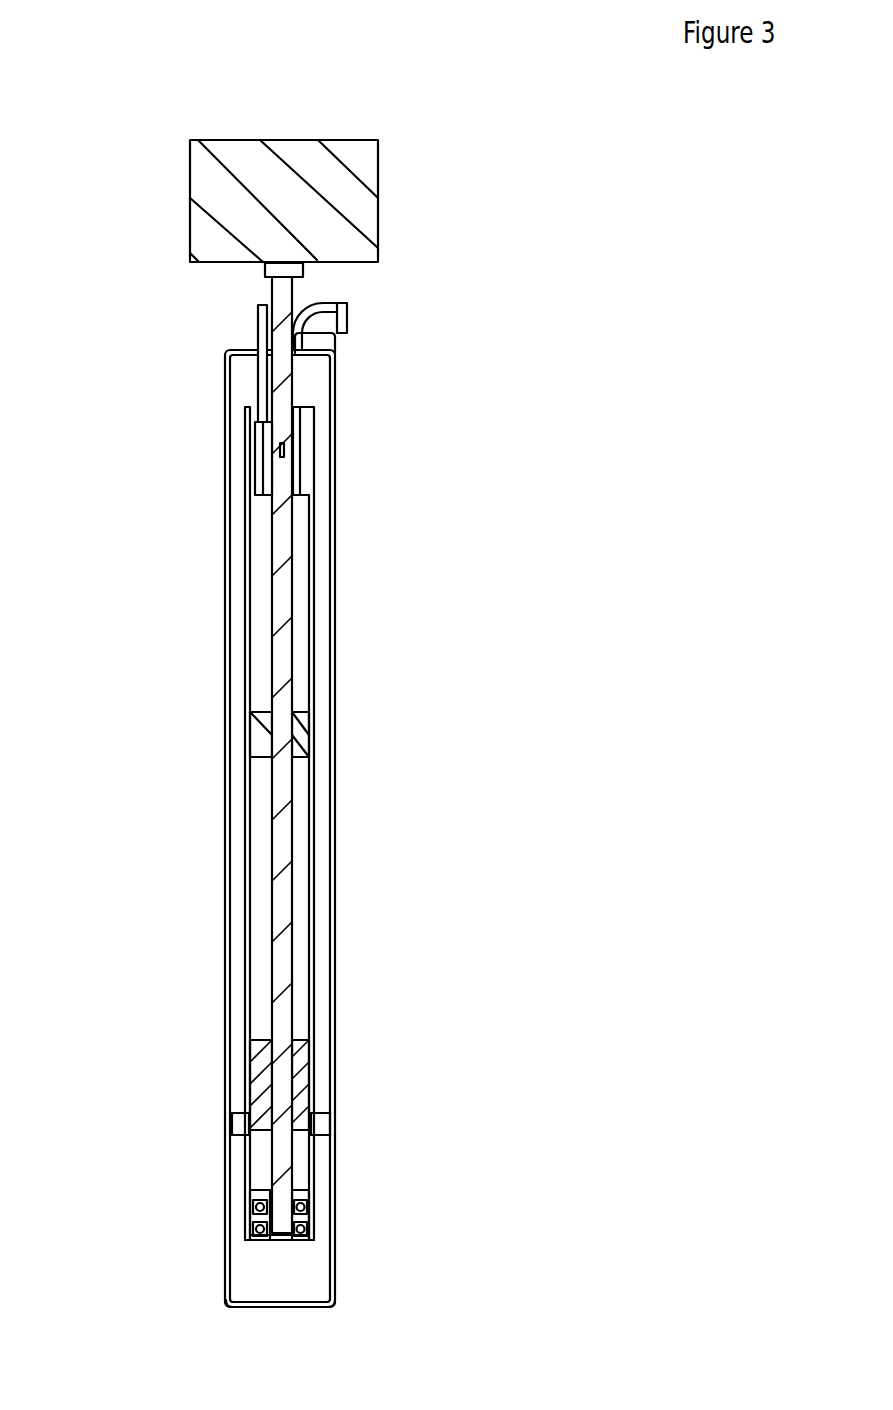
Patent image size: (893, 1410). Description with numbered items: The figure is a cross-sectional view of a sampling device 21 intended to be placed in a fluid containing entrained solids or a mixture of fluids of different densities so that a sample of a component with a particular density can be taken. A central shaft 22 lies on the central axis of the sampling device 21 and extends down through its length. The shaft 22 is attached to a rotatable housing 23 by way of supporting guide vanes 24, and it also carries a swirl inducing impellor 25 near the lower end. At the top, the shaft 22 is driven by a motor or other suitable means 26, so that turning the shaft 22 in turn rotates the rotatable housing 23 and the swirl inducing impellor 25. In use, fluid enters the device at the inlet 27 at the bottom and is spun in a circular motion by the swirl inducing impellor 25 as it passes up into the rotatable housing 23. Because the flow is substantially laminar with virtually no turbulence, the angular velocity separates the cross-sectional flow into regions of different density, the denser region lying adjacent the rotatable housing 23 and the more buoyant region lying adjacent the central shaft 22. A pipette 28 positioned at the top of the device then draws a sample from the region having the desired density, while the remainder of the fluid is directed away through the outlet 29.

The sampling device 21 is at (337, 650).
The central shaft 22 is at (293, 296).
The rotatable housing 23 is at (313, 592).
The supporting guide vanes 24 is at (303, 750).
The swirl inducing impellor 25 is at (270, 1202).
The motor 26 is at (378, 213).
The inlet 27 is at (282, 1307).
The pipette 28 is at (255, 330).
The outlet 29 is at (348, 323).